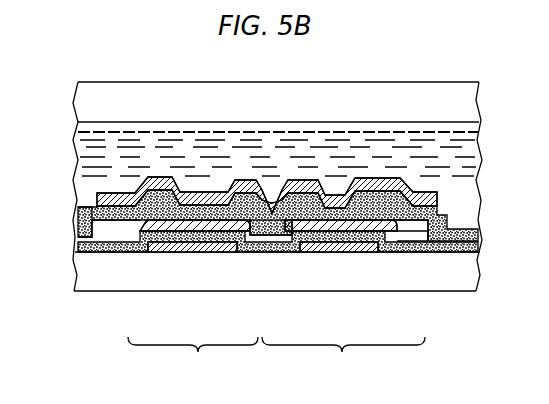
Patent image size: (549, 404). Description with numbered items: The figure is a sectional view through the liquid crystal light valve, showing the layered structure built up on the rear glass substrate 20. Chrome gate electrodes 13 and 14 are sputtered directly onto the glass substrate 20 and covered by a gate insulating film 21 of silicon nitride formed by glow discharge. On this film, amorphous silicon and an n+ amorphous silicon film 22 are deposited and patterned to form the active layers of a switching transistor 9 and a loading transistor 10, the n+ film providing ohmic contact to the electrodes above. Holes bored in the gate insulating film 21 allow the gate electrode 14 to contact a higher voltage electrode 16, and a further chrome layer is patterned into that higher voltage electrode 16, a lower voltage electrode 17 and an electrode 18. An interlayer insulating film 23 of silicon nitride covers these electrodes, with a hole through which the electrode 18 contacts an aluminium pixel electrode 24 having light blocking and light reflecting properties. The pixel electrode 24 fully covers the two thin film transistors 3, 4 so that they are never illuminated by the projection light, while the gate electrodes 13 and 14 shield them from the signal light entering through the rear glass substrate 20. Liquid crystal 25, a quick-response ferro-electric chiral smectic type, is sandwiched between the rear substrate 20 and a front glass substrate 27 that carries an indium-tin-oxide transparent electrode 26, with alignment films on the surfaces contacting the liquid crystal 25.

The thin film transistor 3 is at (193, 354).
The thin film transistor 4 is at (343, 354).
The switching transistor 9 is at (323, 250).
The loading transistor 10 is at (177, 250).
The gate electrode 13 is at (352, 232).
The gate electrode 14 is at (215, 232).
The higher voltage electrode 16 is at (73, 229).
The lower voltage electrode 17 is at (428, 240).
The electrode 18 is at (272, 233).
The glass substrate 20 is at (128, 255).
The gate insulating film 21 is at (480, 248).
The n+ amorphous silicon film 22 is at (403, 242).
The interlayer insulating film 23 is at (480, 237).
The pixel electrode 24 is at (470, 202).
The liquid crystal 25 is at (458, 151).
The transparent electrode 26 is at (458, 124).
The front glass substrate 27 is at (455, 92).